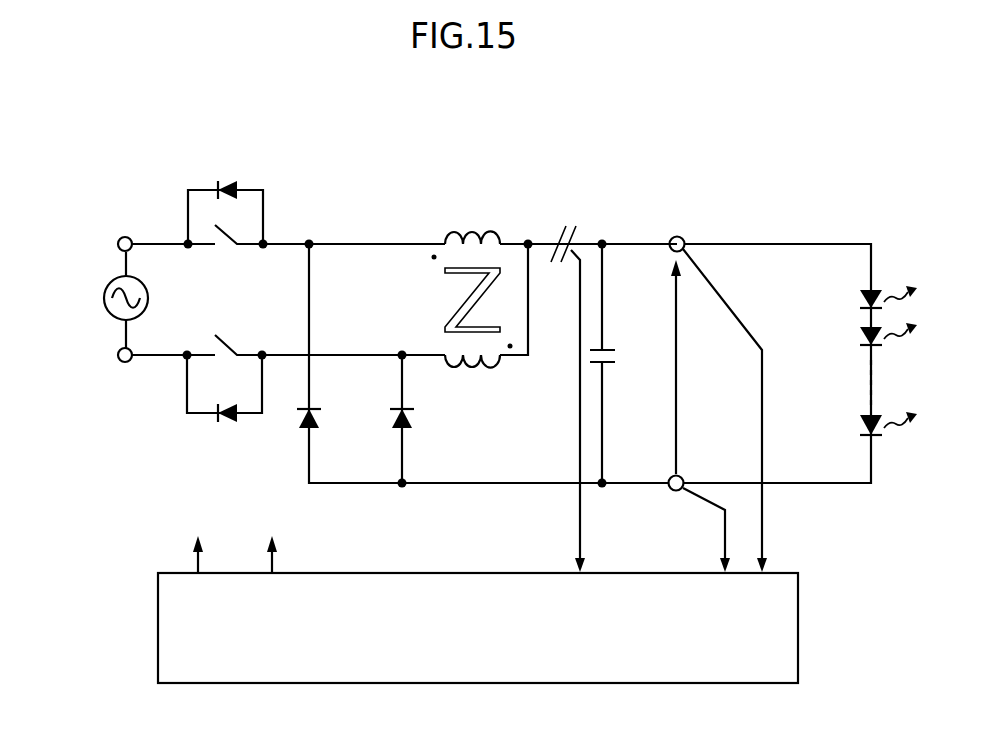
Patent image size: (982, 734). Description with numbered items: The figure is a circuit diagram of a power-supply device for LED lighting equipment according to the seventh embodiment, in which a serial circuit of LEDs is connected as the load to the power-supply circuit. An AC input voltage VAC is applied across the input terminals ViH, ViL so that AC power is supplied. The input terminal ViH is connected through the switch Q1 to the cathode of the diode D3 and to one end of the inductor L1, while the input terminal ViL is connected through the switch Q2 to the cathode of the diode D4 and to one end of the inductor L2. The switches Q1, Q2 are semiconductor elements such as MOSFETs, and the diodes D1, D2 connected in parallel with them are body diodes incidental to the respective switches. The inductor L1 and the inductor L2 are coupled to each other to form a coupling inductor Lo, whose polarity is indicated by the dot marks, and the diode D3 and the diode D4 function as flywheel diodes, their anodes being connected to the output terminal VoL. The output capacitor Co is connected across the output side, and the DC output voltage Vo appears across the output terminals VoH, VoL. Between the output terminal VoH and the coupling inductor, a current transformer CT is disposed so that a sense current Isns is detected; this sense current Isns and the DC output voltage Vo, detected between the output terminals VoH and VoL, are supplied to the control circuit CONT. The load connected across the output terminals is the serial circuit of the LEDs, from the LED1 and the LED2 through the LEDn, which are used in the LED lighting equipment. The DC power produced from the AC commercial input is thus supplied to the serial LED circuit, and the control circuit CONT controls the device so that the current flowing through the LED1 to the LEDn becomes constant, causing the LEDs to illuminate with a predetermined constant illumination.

The AC input voltage VAC is at (106, 292).
The input terminal ViH is at (120, 235).
The input terminal ViL is at (118, 362).
The diode D1 is at (237, 190).
The diode D2 is at (218, 418).
The diode D3 is at (304, 422).
The diode D4 is at (398, 422).
The switch Q1 is at (237, 245).
The switch Q2 is at (224, 344).
The coupling inductor Lo is at (430, 283).
The inductor L1 is at (468, 240).
The inductor L2 is at (478, 366).
The current transformer CT is at (608, 387).
The sense current Isns is at (580, 544).
The output capacitor Co is at (614, 348).
The output terminal VoH is at (688, 235).
The output terminal VoL is at (682, 476).
The DC output voltage Vo is at (695, 367).
The LED LED1 is at (860, 306).
The LED LED2 is at (860, 348).
The LED LEDn is at (860, 436).
The control circuit CONT is at (382, 571).